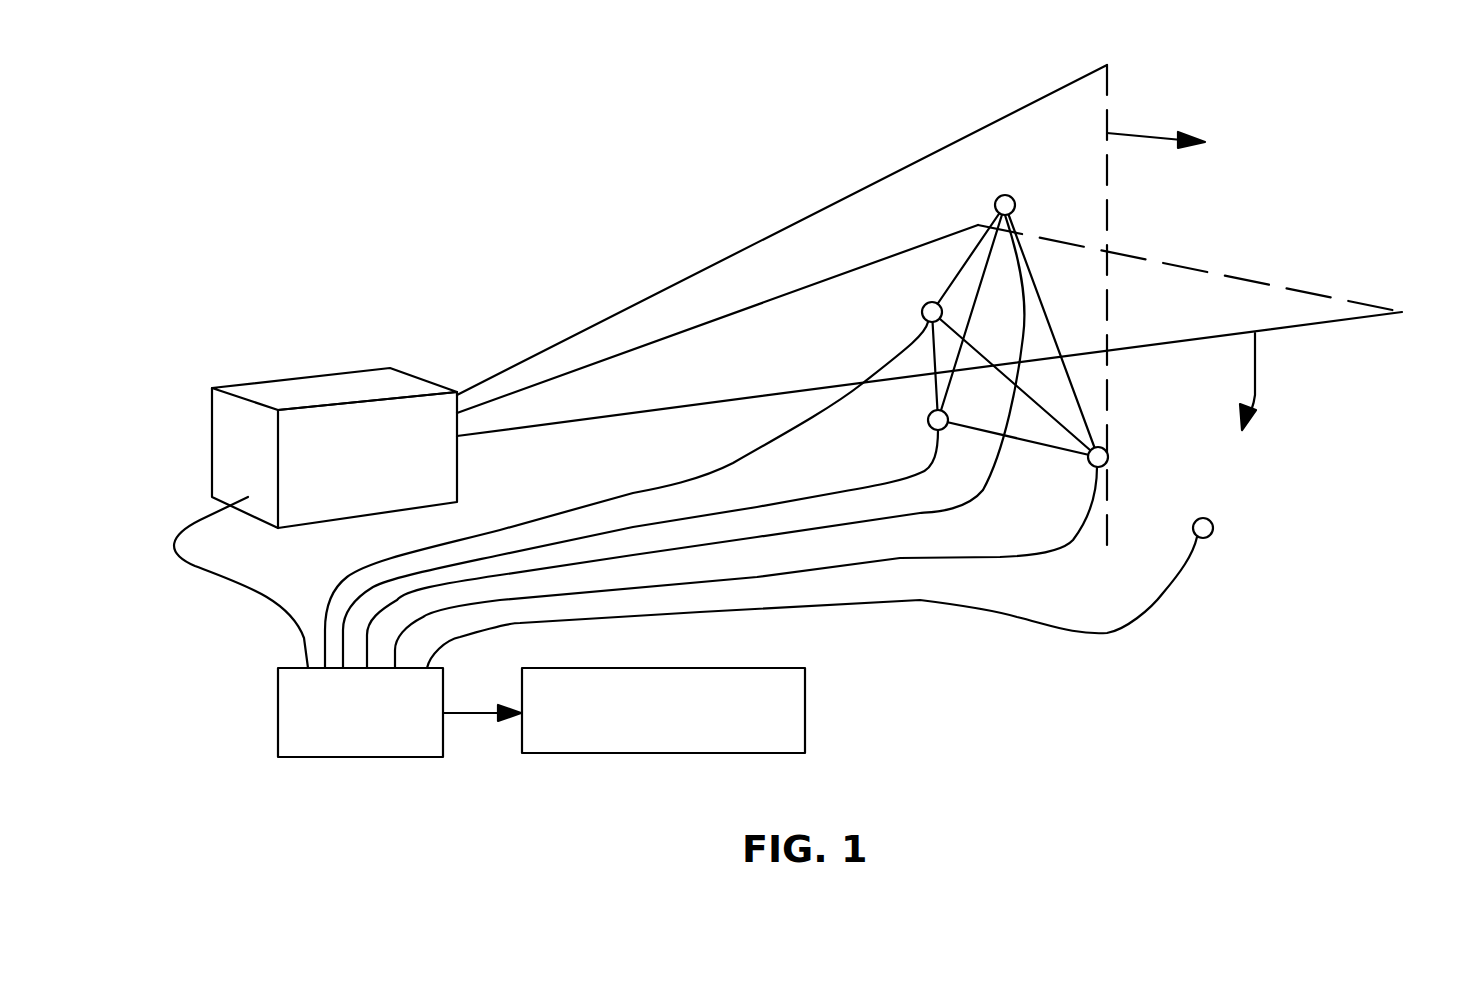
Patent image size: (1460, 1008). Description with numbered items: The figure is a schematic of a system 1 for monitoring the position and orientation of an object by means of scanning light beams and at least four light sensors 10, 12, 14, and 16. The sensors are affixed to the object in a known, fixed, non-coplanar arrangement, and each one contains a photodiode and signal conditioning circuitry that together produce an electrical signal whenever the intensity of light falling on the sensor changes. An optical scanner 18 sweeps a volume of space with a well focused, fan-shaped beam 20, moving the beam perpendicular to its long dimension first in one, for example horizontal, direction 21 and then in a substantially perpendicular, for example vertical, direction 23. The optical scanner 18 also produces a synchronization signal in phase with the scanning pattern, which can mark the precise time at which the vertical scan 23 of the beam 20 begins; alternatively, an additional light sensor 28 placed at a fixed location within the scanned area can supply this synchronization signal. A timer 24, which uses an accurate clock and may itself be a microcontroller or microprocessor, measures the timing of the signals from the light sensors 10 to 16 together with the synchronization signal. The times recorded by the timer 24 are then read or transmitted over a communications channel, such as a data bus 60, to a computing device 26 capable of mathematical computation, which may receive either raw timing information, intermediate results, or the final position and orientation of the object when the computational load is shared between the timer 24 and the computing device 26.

The system 1 is at (425, 212).
The light sensor 10 is at (998, 195).
The light sensor 12 is at (920, 318).
The light sensor 14 is at (935, 430).
The light sensor 16 is at (1087, 470).
The optical scanner 18 is at (288, 387).
The fan-shaped beam 20 is at (1037, 100).
The horizontal direction 21 is at (1142, 138).
The vertical direction 23 is at (1256, 390).
The timer 24 is at (277, 692).
The computing device 26 is at (807, 688).
The additional light sensor 28 is at (1208, 520).
The data bus 60 is at (470, 715).